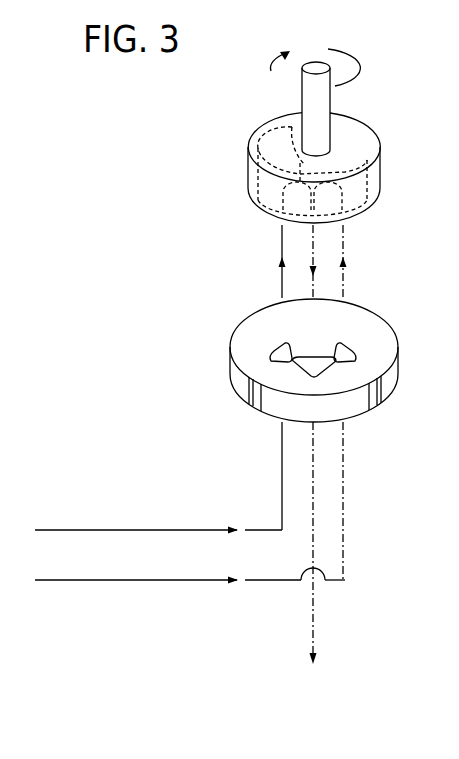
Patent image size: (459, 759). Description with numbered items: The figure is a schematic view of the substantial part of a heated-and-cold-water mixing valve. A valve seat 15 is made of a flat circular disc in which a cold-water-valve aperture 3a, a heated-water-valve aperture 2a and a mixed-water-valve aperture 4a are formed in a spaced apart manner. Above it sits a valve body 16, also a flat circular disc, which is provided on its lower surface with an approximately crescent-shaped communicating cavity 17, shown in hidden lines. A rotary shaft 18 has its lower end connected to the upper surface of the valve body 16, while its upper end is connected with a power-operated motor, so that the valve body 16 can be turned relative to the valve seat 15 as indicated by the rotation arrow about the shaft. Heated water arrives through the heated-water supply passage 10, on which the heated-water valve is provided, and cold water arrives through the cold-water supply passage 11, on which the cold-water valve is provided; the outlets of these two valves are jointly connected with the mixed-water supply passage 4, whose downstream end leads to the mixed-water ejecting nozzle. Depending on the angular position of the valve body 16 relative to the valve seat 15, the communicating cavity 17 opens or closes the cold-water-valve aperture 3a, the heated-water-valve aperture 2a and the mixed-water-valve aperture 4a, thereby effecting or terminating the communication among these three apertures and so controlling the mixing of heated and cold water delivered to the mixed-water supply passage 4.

The rotary shaft 18 is at (303, 104).
The valve body 16 is at (249, 148).
The communicating cavity 17 is at (260, 193).
The valve seat 15 is at (232, 348).
The heated-water-valve aperture 2a is at (270, 346).
The cold-water-valve aperture 3a is at (349, 345).
The mixed-water-valve aperture 4a is at (300, 373).
The cold-water supply passage 11 is at (282, 453).
The heated-water supply passage 10 is at (345, 452).
The mixed-water supply passage 4 is at (313, 597).